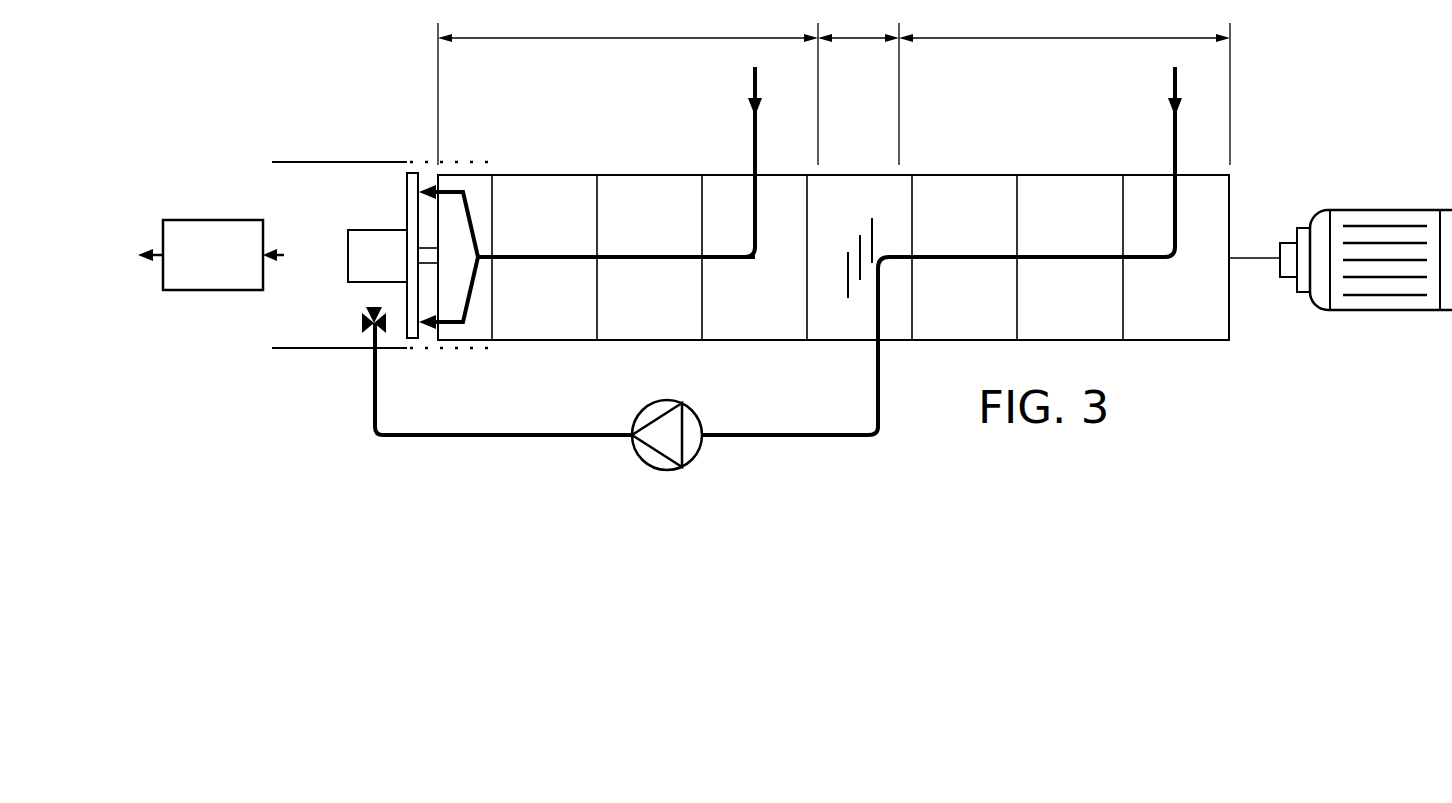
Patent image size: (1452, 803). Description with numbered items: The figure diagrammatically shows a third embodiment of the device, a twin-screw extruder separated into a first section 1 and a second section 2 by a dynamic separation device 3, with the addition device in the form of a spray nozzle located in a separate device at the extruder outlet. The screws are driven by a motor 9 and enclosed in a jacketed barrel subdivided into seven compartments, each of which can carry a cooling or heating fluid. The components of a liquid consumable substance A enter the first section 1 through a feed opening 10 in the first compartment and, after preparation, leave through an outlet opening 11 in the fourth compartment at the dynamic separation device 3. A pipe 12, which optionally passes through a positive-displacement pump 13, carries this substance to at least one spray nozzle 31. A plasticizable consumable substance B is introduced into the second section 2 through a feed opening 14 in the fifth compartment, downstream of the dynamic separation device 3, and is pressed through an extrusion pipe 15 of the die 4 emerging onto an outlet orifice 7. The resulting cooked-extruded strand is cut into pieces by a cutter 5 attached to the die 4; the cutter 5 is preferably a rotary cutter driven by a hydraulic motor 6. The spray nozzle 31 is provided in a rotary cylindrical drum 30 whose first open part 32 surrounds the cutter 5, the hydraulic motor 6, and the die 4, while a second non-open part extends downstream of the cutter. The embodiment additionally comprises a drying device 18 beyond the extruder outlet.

The first section 1 is at (1064, 88).
The second section 2 is at (628, 88).
The dynamic separation device 3 is at (858, 88).
The die 4 is at (488, 175).
The cutter 5 is at (404, 200).
The hydraulic motor 6 is at (352, 230).
The outlet orifice 7 is at (431, 189).
The motor 9 is at (1432, 311).
The feed opening 10 is at (1174, 174).
The outlet opening 11 is at (873, 344).
The pipe 12 is at (494, 437).
The positive-displacement pump 13 is at (640, 408).
The feed opening 14 is at (754, 174).
The extrusion pipe 15 is at (455, 185).
The drying device 18 is at (197, 220).
The rotary cylindrical drum 30 is at (305, 349).
The spray nozzle 31 is at (362, 320).
The first open part 32 is at (452, 351).